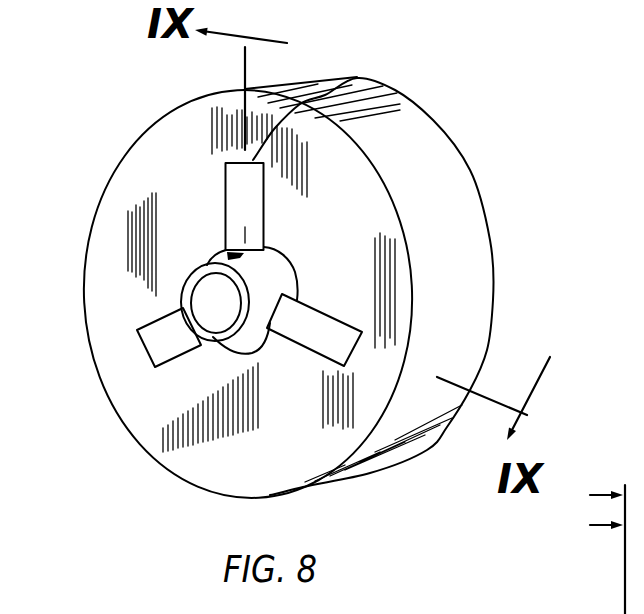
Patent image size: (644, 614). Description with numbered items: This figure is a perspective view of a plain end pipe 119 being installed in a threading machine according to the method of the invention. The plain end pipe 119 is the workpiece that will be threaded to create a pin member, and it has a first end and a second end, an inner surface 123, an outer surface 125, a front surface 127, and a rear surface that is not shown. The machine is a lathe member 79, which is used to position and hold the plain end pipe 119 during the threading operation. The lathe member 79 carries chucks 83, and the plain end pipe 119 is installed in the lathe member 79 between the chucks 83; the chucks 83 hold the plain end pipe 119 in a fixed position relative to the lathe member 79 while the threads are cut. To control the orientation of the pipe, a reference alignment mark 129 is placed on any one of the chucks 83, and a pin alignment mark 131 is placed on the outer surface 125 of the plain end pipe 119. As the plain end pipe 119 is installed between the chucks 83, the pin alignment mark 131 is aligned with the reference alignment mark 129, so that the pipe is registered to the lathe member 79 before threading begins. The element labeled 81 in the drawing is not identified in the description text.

The lathe member 79 is at (493, 282).
The inner wall of casing 81 is at (170, 160).
The chucks 83 is at (358, 74).
The plain end pipe 119 is at (187, 285).
The inner surface 123 is at (207, 318).
The outer surface 125 is at (260, 267).
The front surface 127 is at (146, 348).
The reference alignment mark 129 is at (248, 235).
The pin alignment mark 131 is at (233, 250).